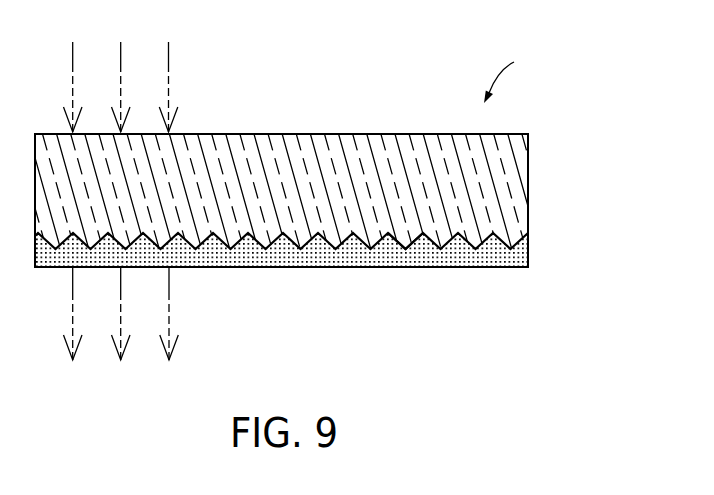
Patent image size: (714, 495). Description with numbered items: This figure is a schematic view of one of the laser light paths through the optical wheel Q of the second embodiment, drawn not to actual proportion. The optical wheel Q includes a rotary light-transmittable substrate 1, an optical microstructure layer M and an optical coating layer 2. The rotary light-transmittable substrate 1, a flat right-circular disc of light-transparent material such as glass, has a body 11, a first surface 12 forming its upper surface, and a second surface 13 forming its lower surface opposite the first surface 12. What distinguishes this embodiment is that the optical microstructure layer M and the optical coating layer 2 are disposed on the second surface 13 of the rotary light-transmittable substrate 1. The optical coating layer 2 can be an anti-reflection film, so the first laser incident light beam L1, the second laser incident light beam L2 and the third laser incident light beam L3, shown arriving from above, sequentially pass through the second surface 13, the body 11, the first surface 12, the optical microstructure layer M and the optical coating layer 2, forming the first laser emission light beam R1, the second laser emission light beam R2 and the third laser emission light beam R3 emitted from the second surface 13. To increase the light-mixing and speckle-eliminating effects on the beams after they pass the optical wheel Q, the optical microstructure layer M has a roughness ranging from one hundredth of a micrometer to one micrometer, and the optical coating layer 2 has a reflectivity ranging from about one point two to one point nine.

The rotary light-transmittable substrate 1 is at (541, 167).
The optical coating layer 2 is at (541, 251).
The body 11 is at (497, 211).
The first surface 12 is at (497, 134).
The second surface 13 is at (467, 244).
The optical microstructure layer M is at (415, 244).
The optical wheel Q is at (508, 70).
The first laser incident light beam L1 is at (70, 71).
The second laser incident light beam L2 is at (120, 71).
The third laser incident light beam L3 is at (168, 71).
The first laser emission light beam R1 is at (71, 329).
The second laser emission light beam R2 is at (120, 329).
The third laser emission light beam R3 is at (169, 329).